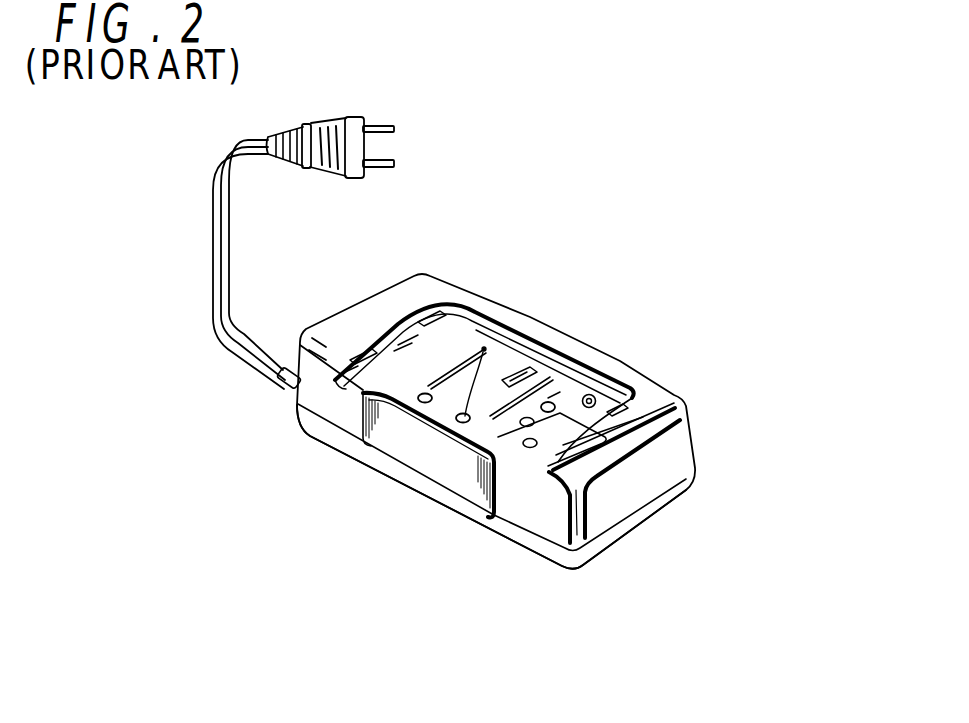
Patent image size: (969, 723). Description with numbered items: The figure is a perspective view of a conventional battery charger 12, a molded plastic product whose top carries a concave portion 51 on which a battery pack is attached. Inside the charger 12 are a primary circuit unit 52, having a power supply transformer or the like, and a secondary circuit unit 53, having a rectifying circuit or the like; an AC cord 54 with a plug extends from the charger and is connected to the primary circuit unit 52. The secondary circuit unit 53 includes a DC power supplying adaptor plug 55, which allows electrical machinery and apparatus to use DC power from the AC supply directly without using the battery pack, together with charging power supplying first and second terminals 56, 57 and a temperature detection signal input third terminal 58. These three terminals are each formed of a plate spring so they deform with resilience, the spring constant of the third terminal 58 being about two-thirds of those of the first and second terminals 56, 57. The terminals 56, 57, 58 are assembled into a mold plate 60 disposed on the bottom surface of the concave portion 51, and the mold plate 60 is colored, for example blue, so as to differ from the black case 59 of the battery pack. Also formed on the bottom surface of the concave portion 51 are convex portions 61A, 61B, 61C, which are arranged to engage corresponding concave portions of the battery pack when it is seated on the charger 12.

The battery charger 12 is at (474, 132).
The concave portion 51 is at (456, 338).
The primary circuit unit 52 is at (425, 507).
The secondary circuit unit 53 is at (576, 578).
The AC cord 54 is at (255, 138).
The DC power supplying adaptor plug 55 is at (633, 333).
The first terminal 56 is at (552, 397).
The second terminal 57 is at (590, 394).
The third terminal 58 is at (595, 462).
The case 59 is at (662, 382).
The mold plate 60 is at (680, 393).
The convex portion 61A is at (423, 394).
The convex portion 61B is at (490, 413).
The convex portion 61C is at (549, 400).